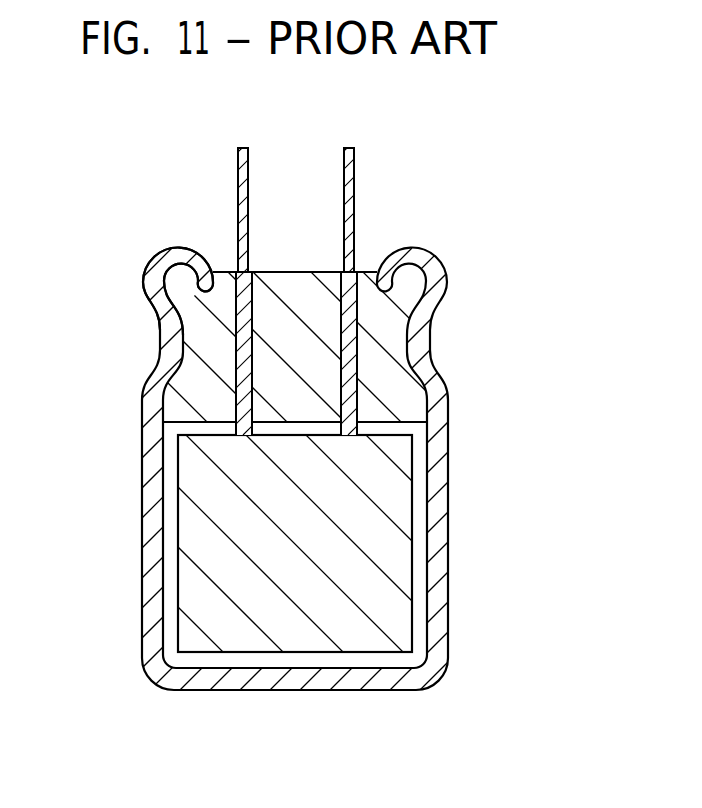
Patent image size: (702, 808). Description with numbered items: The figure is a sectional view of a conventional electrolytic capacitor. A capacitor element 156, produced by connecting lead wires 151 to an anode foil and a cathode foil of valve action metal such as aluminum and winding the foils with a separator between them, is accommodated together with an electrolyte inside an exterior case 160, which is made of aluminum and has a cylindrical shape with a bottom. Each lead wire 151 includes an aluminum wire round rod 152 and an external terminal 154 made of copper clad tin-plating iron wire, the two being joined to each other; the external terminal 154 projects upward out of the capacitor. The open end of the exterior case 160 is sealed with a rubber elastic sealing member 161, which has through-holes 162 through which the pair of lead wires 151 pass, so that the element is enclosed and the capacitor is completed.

The lead wire 151 is at (242, 148).
The external terminal 154 is at (348, 198).
The aluminum wire round rod 152 is at (347, 310).
The through-hole 162 is at (235, 273).
The rubber elastic sealing member 161 is at (190, 313).
The exterior case 160 is at (152, 503).
The capacitor element 156 is at (393, 550).